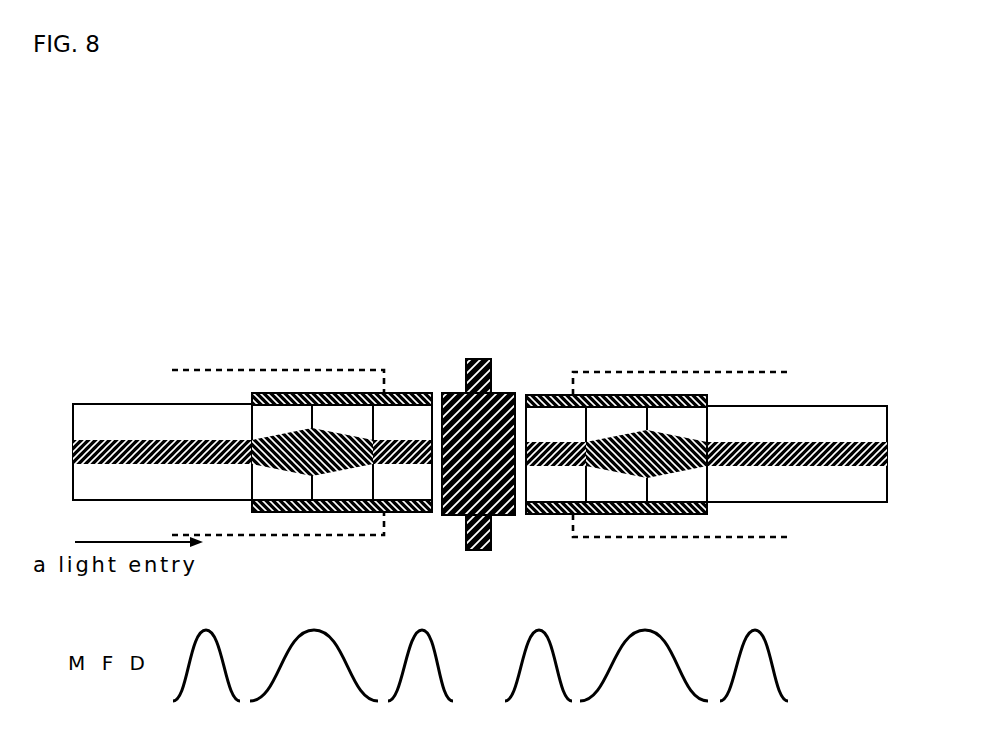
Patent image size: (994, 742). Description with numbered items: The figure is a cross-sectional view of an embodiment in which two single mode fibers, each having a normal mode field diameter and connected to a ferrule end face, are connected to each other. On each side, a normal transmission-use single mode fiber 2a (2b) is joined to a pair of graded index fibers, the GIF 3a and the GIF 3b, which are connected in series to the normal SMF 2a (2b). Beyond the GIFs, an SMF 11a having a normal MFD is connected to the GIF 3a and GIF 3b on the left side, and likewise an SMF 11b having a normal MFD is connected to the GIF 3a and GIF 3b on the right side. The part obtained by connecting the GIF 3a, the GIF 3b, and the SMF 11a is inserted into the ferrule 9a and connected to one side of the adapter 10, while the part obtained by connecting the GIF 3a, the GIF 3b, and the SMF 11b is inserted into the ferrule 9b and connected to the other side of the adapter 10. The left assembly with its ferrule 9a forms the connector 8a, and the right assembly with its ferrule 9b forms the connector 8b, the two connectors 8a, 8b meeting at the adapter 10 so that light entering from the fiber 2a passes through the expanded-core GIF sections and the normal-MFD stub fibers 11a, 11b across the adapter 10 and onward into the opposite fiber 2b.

The transmission-use single mode fiber 2a is at (97, 418).
The transmission-use single mode fiber 2b is at (795, 418).
The GIF 3a is at (270, 422).
The GIF 3b is at (320, 422).
The connector 8a is at (237, 370).
The connector 8b is at (735, 372).
The ferrule 9a is at (367, 393).
The ferrule 9b is at (585, 395).
The adapter 10 is at (482, 357).
The SMF having a normal MFD 11a is at (405, 417).
The SMF having a normal MFD 11b is at (538, 418).